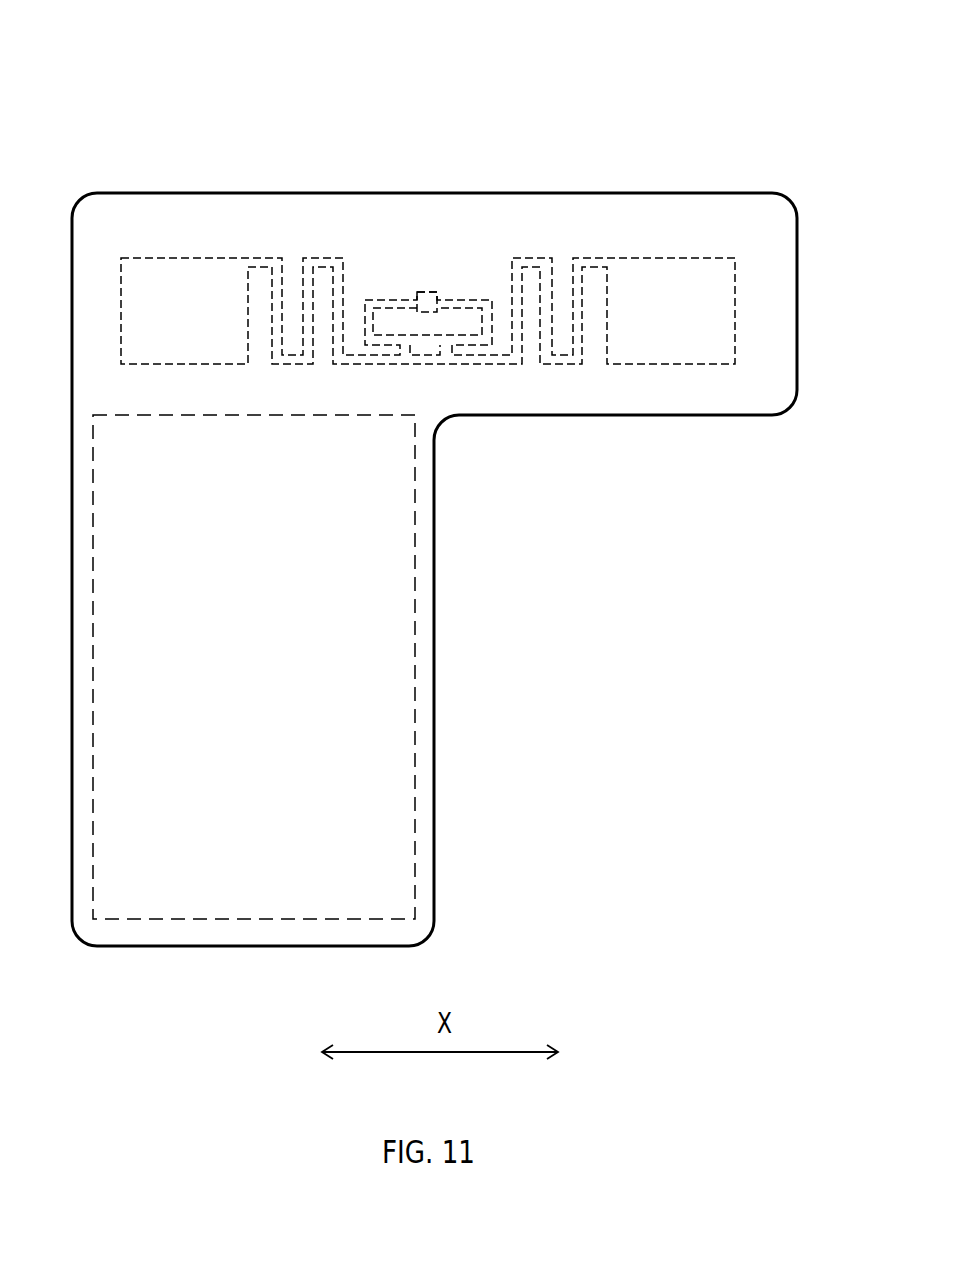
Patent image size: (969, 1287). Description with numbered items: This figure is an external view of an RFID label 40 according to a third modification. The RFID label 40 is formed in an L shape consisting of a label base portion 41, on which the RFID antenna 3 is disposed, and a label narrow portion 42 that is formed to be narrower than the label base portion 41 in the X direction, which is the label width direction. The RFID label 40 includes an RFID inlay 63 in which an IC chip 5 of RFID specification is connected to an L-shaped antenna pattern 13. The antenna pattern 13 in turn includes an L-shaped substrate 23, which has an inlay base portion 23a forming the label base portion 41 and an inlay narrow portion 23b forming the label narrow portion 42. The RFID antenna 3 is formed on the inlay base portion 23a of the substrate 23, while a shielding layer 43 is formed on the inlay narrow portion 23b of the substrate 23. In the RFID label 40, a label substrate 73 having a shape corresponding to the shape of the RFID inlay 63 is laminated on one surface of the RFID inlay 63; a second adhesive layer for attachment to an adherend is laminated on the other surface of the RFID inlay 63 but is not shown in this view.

The RFID label 40 is at (390, 122).
The label substrate 73 is at (235, 210).
The label base portion 41 is at (798, 293).
The label narrow portion 42 is at (435, 786).
The RFID inlay 63 is at (738, 67).
The IC chip 5 is at (427, 290).
The antenna pattern 13 is at (787, 115).
The substrate 23 is at (650, 193).
The inlay base portion 23a is at (780, 267).
The inlay narrow portion 23b is at (425, 856).
The RFID antenna 3 is at (677, 257).
The shielding layer 43 is at (383, 661).